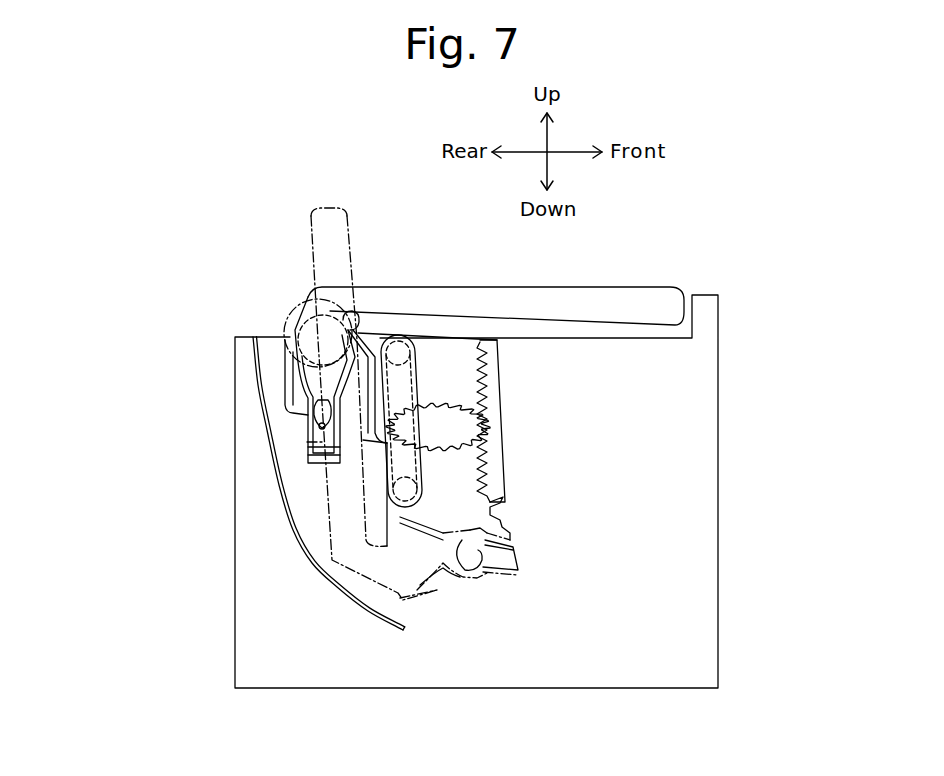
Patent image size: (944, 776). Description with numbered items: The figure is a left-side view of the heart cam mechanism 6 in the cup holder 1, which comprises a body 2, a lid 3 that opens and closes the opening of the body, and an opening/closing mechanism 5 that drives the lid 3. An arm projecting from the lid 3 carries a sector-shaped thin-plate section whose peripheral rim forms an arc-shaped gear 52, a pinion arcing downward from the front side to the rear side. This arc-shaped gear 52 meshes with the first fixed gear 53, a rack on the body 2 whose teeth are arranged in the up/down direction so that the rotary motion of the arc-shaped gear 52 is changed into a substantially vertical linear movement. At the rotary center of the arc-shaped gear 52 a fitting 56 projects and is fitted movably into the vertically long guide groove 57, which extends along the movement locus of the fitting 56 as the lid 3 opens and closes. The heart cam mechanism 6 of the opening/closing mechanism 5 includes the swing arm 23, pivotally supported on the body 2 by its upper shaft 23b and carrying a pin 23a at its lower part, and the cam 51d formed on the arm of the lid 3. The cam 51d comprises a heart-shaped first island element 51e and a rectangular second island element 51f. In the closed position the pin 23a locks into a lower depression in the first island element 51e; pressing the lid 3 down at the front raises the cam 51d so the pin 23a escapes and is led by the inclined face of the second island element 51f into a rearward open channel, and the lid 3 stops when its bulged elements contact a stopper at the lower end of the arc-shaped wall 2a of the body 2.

The cup holder 1 is at (712, 258).
The body 2 is at (305, 690).
The arc-shaped wall 2a is at (283, 528).
The lid 3 is at (603, 283).
The opening/closing mechanism 5 is at (641, 282).
The heart cam mechanism 6 is at (349, 332).
The swing arm 23 is at (293, 313).
The pin 23a is at (307, 442).
The shaft 23b is at (303, 332).
The cam 51d is at (302, 417).
The first island element 51e is at (305, 393).
The second island element 51f is at (320, 447).
The arc-shaped gear 52 is at (483, 433).
The first fixed gear 53 is at (485, 447).
The fitting 56 is at (397, 353).
The guide groove 57 is at (420, 500).